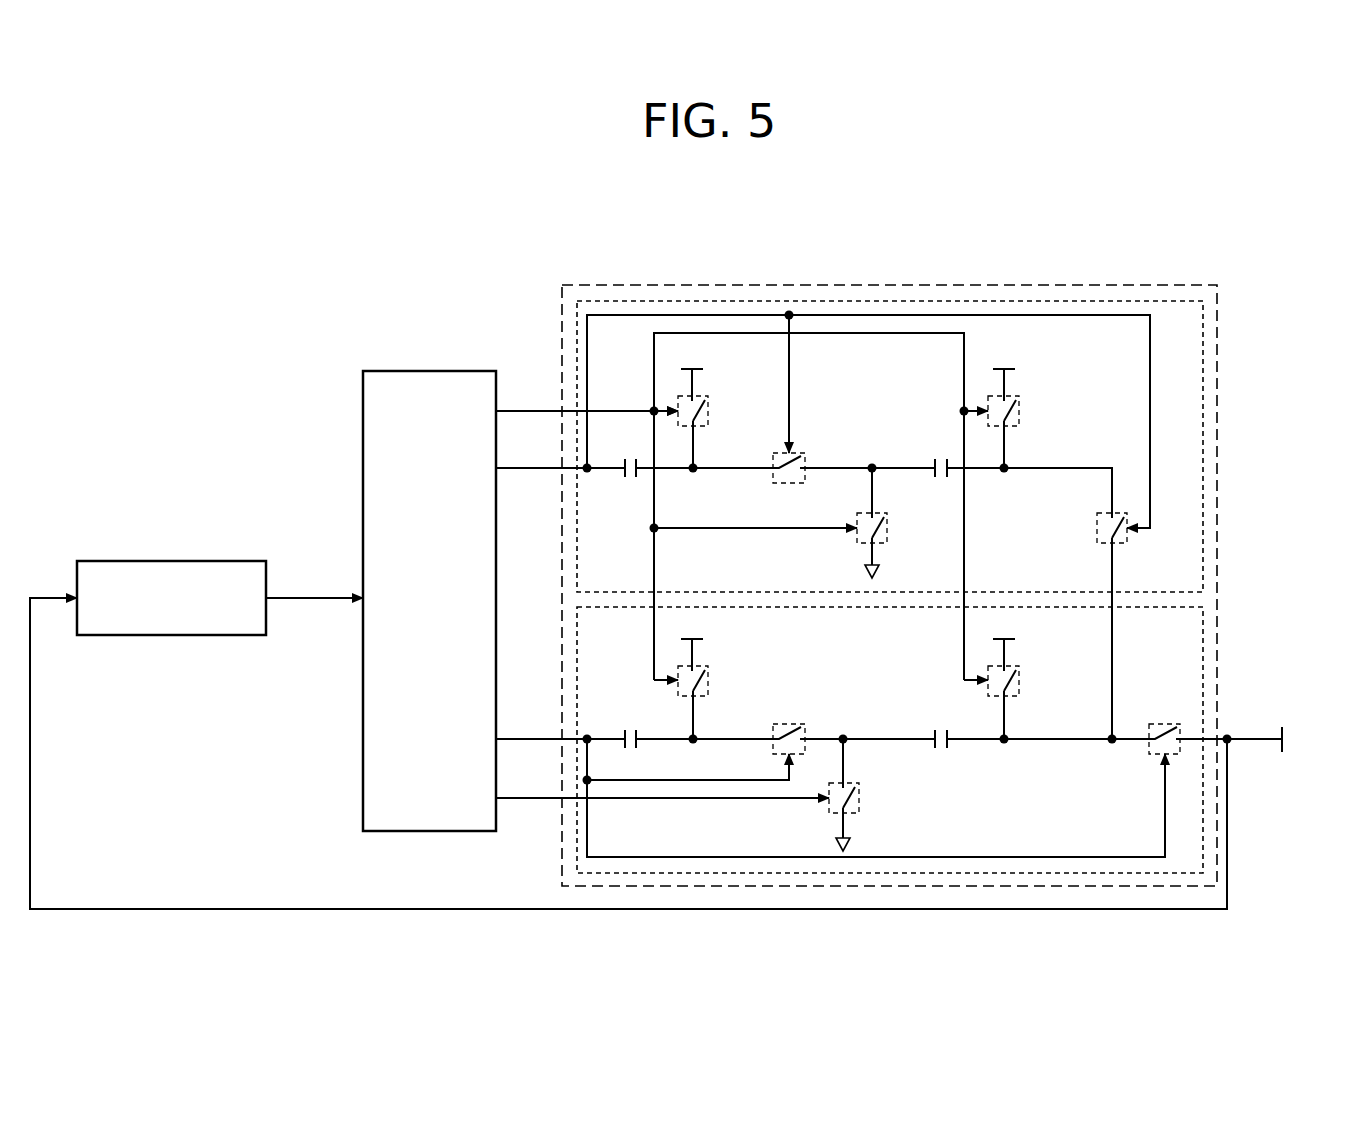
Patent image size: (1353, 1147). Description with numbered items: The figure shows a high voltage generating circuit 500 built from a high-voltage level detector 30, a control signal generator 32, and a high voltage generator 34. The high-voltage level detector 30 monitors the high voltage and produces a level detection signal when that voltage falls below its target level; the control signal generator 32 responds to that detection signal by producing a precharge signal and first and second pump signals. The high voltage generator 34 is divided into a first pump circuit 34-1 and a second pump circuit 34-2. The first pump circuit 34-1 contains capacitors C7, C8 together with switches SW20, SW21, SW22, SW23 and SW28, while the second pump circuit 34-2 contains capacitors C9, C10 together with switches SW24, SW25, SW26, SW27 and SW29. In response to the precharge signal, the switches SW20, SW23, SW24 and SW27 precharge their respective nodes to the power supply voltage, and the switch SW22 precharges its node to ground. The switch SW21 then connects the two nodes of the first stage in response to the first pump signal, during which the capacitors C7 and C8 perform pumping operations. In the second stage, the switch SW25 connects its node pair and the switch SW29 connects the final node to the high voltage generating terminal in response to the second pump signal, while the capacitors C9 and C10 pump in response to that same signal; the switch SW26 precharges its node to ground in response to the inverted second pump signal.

The high voltage generating circuit 500 is at (1036, 251).
The high-voltage level detector 30 is at (205, 560).
The control signal generator 32 is at (431, 369).
The high voltage generator 34 is at (921, 285).
The first pump circuit 34-1 is at (1203, 437).
The second pump circuit 34-2 is at (1203, 633).
The switch SW20 is at (708, 411).
The switch SW21 is at (788, 452).
The switch SW22 is at (887, 528).
The switch SW23 is at (1019, 411).
The switch SW24 is at (708, 680).
The switch SW25 is at (772, 749).
The switch SW26 is at (859, 798).
The switch SW27 is at (1014, 672).
The switch SW28 is at (1096, 528).
The switch SW29 is at (1148, 761).
The capacitor C7 is at (629, 457).
The capacitor C8 is at (942, 457).
The capacitor C9 is at (629, 728).
The capacitor C10 is at (943, 728).